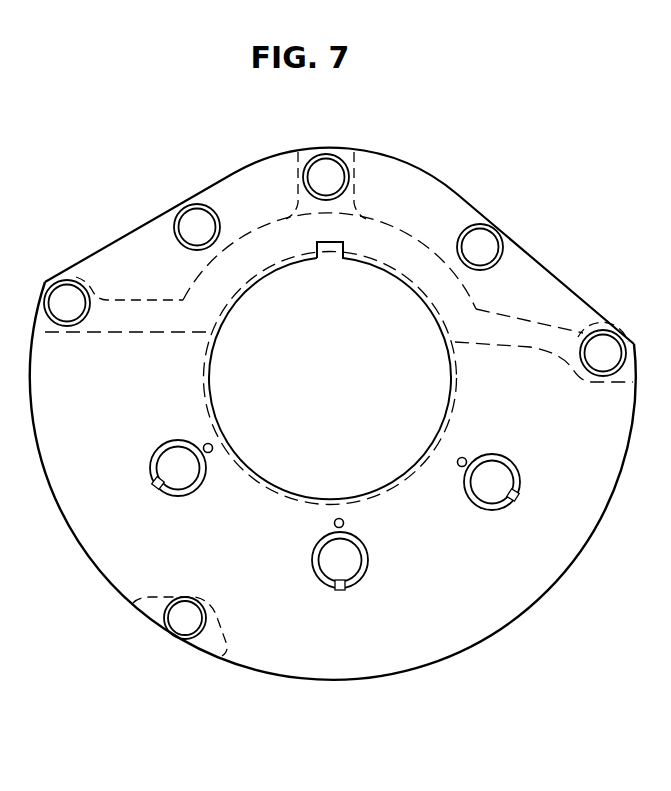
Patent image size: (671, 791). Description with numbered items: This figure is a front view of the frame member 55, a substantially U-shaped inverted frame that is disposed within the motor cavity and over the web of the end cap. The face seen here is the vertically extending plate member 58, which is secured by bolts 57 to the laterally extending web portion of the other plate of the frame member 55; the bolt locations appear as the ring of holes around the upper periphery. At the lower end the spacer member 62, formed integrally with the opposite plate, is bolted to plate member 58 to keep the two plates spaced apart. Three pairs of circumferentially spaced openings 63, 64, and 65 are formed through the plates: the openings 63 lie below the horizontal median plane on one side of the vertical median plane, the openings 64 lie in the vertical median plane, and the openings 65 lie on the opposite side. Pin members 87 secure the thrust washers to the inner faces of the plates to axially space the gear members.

The frame member 55 is at (548, 239).
The bolts 57 is at (326, 172).
The plate member 58 is at (538, 589).
The spacer member 62 is at (212, 643).
The openings 63 is at (178, 480).
The openings 64 is at (327, 567).
The openings 65 is at (487, 494).
The pin members 87 is at (205, 444).